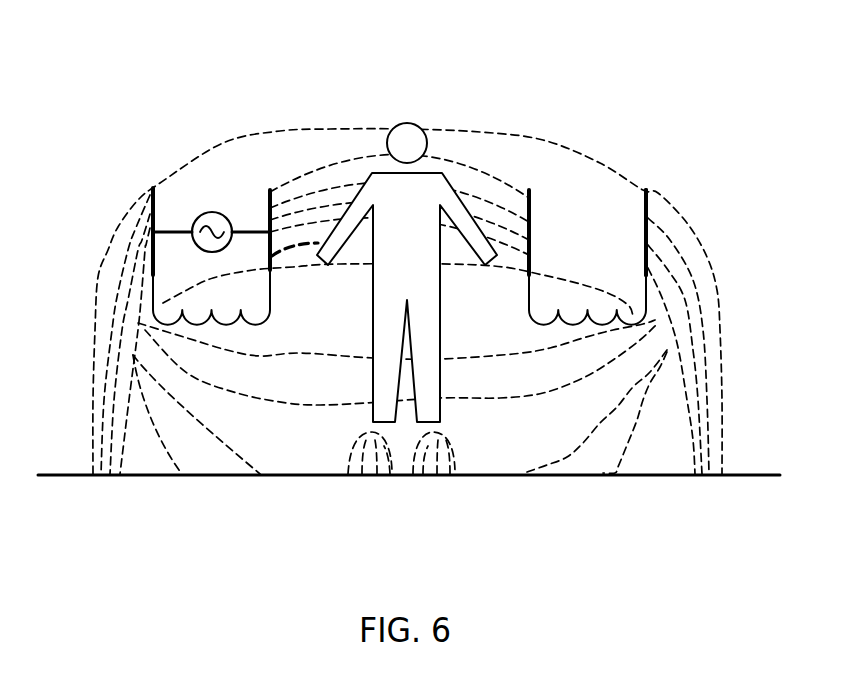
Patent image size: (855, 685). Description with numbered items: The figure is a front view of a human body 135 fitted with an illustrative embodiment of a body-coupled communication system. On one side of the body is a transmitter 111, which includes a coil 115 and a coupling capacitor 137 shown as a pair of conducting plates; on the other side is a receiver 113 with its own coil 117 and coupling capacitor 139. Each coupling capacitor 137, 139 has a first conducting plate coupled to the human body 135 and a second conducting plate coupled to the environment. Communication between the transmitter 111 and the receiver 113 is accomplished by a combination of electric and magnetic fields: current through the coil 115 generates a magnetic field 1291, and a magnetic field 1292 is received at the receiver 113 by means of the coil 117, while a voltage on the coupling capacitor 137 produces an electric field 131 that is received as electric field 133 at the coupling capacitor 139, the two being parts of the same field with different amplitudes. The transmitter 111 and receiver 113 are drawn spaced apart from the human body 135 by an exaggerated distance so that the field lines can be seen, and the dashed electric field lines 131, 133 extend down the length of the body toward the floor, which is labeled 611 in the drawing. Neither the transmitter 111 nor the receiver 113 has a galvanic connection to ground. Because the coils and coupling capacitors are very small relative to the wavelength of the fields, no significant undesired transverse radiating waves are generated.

The transmitter 111 is at (225, 214).
The receiver 113 is at (645, 243).
The coil 115 is at (273, 322).
The coil 117 is at (538, 322).
The electric field 131 is at (92, 412).
The electric field 133 is at (722, 400).
The human body 135 is at (388, 111).
The coupling capacitor 137 is at (154, 192).
The coupling capacitor 139 is at (532, 203).
The ground / floor 611 is at (665, 477).
The magnetic field 1291 is at (300, 353).
The magnetic field 1292 is at (512, 352).